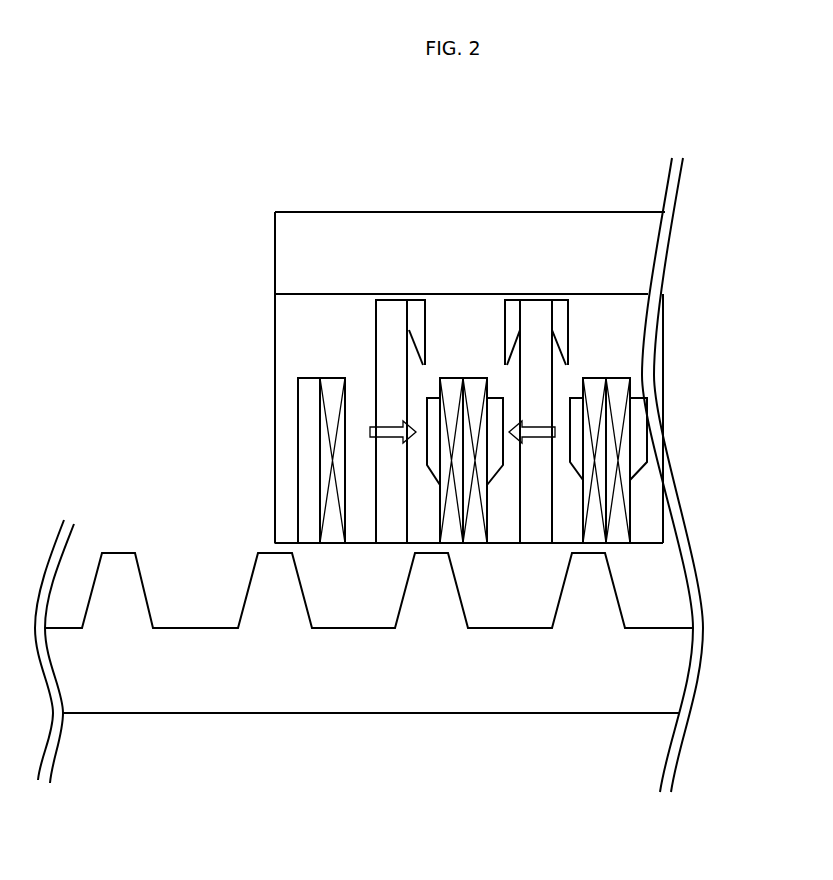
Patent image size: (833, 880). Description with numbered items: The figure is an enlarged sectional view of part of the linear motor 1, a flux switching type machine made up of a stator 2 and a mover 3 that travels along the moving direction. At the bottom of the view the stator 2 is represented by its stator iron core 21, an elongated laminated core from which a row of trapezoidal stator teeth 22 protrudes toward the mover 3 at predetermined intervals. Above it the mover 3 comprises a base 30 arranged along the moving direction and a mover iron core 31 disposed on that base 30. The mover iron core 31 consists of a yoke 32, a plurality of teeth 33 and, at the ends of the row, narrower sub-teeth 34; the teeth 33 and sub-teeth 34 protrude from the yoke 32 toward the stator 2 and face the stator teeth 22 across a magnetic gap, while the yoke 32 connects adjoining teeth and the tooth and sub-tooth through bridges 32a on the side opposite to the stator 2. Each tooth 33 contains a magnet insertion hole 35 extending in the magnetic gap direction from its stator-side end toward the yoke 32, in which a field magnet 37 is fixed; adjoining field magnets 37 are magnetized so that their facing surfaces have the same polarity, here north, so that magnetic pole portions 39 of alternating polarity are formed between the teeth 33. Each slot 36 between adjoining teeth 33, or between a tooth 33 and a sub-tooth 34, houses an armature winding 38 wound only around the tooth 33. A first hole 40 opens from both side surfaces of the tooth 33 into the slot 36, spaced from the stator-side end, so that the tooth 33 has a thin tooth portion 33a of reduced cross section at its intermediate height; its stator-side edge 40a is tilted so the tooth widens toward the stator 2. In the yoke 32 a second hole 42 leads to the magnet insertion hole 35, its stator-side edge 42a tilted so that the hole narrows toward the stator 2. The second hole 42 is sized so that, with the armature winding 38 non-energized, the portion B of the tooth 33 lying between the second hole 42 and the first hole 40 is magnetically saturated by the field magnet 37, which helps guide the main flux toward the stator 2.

The linear motor 1 is at (223, 305).
The stator 2 is at (369, 648).
The mover 3 is at (485, 433).
The stator iron core 21 is at (135, 690).
The stator teeth 22 is at (268, 578).
The base 30 is at (298, 243).
The mover iron core 31 is at (292, 380).
The yoke 32 is at (474, 305).
The bridges 32a is at (532, 300).
The teeth 33 is at (355, 520).
The thin tooth portion 33a is at (651, 447).
The sub-teeth 34 is at (283, 507).
The magnet insertion hole 35 is at (405, 487).
The slot 36 is at (340, 505).
The field magnet 37 is at (517, 348).
The armature winding 38 is at (592, 385).
The magnetic pole portions 39 is at (445, 360).
The first hole 40 is at (492, 440).
The edge 40a is at (498, 468).
The second hole 42 is at (518, 305).
The edge 42a is at (518, 335).
The portion B is at (495, 375).